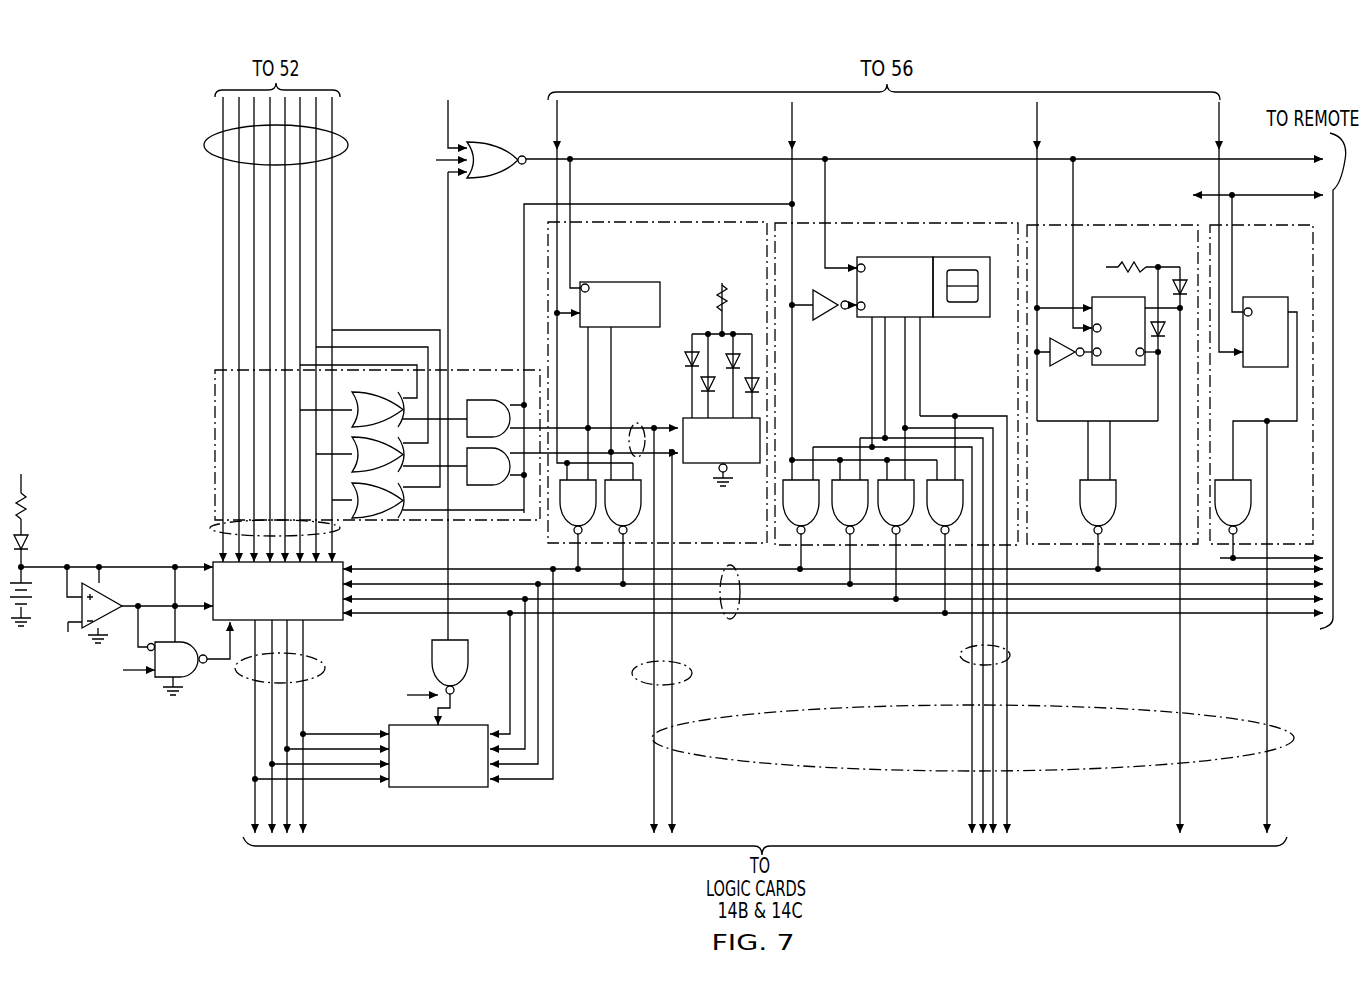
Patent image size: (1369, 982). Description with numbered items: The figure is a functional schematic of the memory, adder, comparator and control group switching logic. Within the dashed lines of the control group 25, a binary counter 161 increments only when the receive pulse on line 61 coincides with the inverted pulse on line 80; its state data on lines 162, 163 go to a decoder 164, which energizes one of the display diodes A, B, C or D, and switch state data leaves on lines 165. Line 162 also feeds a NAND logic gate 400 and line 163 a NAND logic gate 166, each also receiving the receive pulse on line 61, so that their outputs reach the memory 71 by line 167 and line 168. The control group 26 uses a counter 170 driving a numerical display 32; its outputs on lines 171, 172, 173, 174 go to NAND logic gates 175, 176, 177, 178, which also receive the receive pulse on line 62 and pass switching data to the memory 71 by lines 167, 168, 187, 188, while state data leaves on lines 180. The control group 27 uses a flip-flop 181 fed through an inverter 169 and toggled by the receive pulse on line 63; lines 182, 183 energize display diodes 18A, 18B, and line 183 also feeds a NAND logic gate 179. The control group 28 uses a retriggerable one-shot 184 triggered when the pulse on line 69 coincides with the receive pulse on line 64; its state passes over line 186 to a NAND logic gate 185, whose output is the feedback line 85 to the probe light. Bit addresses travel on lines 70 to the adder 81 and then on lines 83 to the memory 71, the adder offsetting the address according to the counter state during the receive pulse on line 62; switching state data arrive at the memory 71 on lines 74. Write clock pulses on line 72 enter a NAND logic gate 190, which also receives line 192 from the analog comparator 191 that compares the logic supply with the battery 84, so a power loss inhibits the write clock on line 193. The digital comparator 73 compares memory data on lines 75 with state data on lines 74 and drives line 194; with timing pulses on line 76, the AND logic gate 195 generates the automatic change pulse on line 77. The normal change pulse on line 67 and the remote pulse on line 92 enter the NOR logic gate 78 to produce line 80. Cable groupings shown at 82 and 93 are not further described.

The lines 70 is at (346, 148).
The lines 83 is at (212, 530).
The adder 81 is at (500, 370).
The NAND logic gate 400 is at (552, 525).
The remote input line 92 is at (448, 108).
The line 67 is at (436, 160).
The line 77 is at (448, 250).
The NOR logic gate 78 is at (488, 142).
The line 80 is at (542, 157).
The line 61 is at (560, 102).
The line 62 is at (792, 122).
The line 63 is at (1037, 122).
The line 64 is at (1219, 120).
The line 69 is at (1265, 194).
The control group 25 is at (548, 234).
The binary counter 161 is at (622, 282).
The line 162 is at (588, 358).
The line 163 is at (611, 358).
The NAND logic gate 166 is at (600, 532).
The line 168 is at (594, 558).
The decoder 164 is at (684, 418).
The cable 82 is at (634, 423).
The lines 165 is at (648, 664).
The control group 26 is at (962, 222).
The counter 170 is at (880, 256).
The numerical display 32 is at (956, 258).
The line 171 is at (872, 348).
The line 172 is at (885, 366).
The line 173 is at (905, 366).
The line 174 is at (920, 346).
The lines 180 is at (970, 652).
The NAND logic gate 175 is at (795, 524).
The NAND logic gate 176 is at (844, 532).
The NAND logic gate 177 is at (886, 539).
The NAND logic gate 178 is at (934, 546).
The control group 27 is at (1174, 226).
The inverter 169 is at (1067, 257).
The line 187 is at (1078, 364).
The flip-flop 181 is at (1105, 297).
The line 182 is at (1147, 297).
The display diode 18A is at (1180, 278).
The display diode 18B is at (1160, 372).
The line 183 is at (1138, 366).
The NAND logic gate 179 is at (1118, 484).
The control group 28 is at (1262, 226).
The retriggerable one-shot 184 is at (1256, 297).
The line 186 is at (1297, 392).
The NAND logic gate 185 is at (1238, 482).
The feedback line 85 is at (1304, 544).
The memory 71 is at (336, 621).
The line 167 is at (512, 569).
The line 188 is at (802, 613).
The lines 74 is at (724, 568).
The cable to logic cards 93 is at (652, 738).
The digital comparator 73 is at (474, 724).
The lines 75 is at (238, 668).
The AND logic gate 195 is at (462, 648).
The line 76 is at (432, 690).
The line 194 is at (464, 702).
The battery 84 is at (30, 600).
The analog comparator 191 is at (104, 594).
The line 192 is at (160, 606).
The NAND logic gate 190 is at (140, 642).
The line 72 is at (142, 676).
The line 193 is at (230, 650).